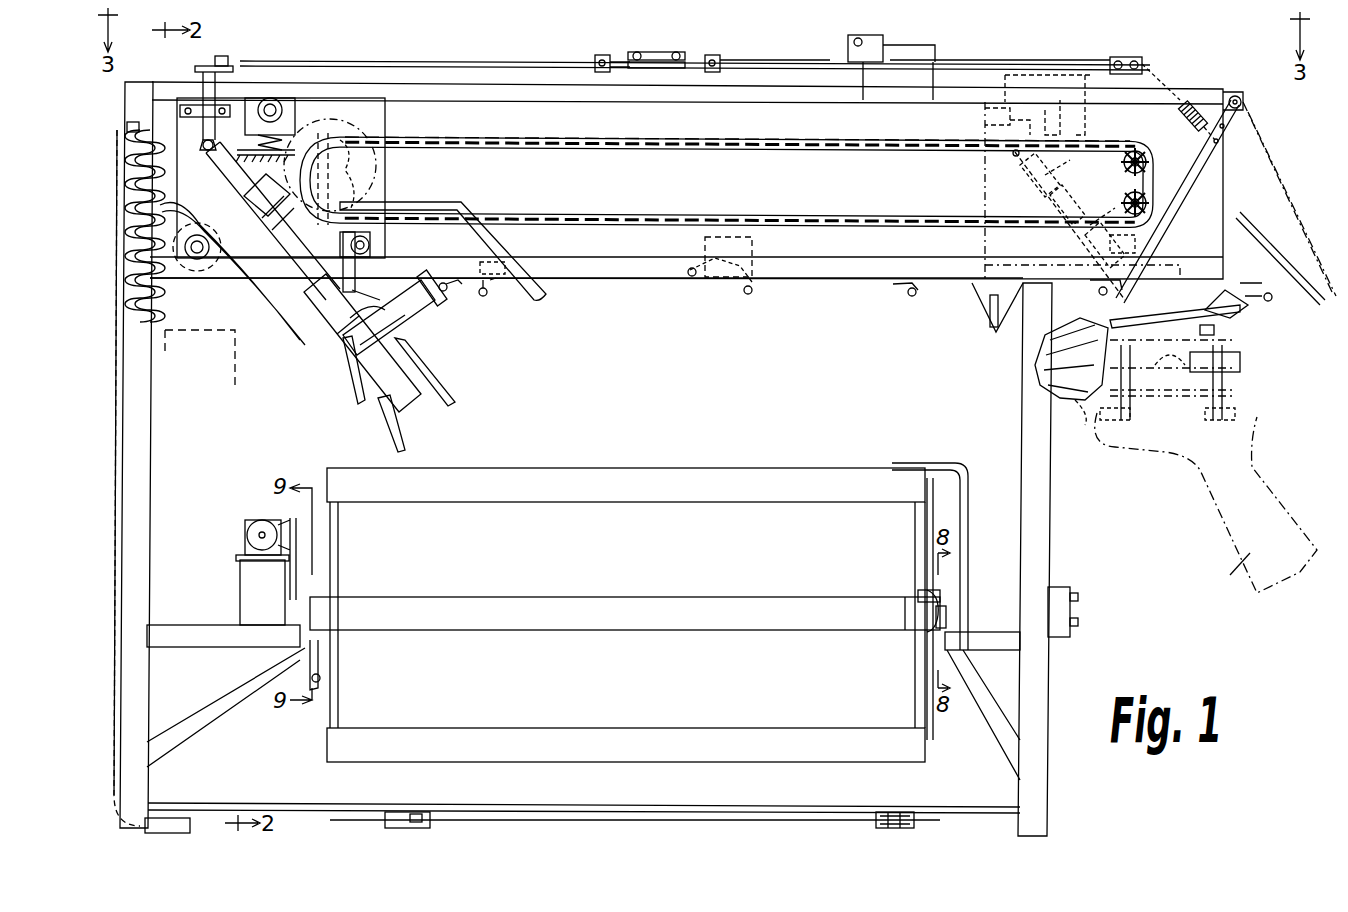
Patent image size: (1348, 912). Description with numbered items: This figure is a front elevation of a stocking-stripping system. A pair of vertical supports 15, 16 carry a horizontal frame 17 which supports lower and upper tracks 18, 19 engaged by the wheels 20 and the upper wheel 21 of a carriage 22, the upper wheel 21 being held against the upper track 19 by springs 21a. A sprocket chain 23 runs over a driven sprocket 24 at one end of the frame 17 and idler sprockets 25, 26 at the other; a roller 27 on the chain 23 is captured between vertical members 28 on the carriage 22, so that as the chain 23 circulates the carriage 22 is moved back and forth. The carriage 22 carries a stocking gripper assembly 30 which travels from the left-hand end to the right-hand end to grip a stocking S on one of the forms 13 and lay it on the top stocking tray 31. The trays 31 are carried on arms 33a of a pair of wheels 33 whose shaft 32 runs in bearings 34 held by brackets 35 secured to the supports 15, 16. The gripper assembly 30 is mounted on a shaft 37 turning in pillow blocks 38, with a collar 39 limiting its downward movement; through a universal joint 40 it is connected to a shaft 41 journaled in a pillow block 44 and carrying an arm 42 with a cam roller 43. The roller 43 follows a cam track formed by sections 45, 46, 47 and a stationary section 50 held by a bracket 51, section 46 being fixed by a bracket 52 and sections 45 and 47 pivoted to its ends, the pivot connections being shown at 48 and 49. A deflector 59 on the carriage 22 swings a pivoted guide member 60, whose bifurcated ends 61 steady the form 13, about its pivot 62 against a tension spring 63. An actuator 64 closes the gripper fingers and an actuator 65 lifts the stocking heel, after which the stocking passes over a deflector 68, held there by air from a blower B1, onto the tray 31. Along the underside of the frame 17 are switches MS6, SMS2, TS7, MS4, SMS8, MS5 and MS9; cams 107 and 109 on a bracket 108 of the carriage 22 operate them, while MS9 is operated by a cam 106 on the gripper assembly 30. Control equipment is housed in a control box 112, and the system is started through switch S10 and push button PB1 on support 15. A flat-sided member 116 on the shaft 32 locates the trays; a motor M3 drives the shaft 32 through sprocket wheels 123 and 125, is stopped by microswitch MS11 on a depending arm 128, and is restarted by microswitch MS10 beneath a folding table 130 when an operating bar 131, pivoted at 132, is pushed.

The form 13 is at (1235, 570).
The vertical support 15 is at (1049, 524).
The vertical support 16 is at (140, 412).
The horizontal frame 17 is at (820, 258).
The lower track 18 is at (598, 272).
The upper track 19 is at (716, 90).
The wheel 20 is at (380, 244).
The upper wheel 21 is at (292, 108).
The spring 21a is at (264, 156).
The carriage 22 is at (395, 137).
The sprocket chain 23 is at (528, 140).
The driven sprocket 24 is at (352, 170).
The idler sprocket 25 is at (1122, 162).
The idler sprocket 26 is at (1122, 203).
The roller 27 is at (222, 246).
The vertical member 28 is at (338, 145).
The stocking gripper assembly 30 is at (292, 374).
The stocking tray 31 is at (688, 480).
The shaft 32 is at (948, 616).
The wheel 33 is at (358, 542).
The arm 33a is at (920, 706).
The bearing 34 is at (940, 600).
The bracket 35 is at (238, 692).
The shaft 37 is at (270, 288).
The pillow block 38 is at (244, 200).
The collar 39 is at (270, 230).
The universal joint 40 is at (226, 170).
The shaft 41 is at (203, 98).
The arm 42 is at (228, 66).
The cam roller 43 is at (220, 56).
The pillow block 44 is at (203, 147).
The cam track section 45 is at (472, 62).
The cam track section 46 is at (625, 60).
The cam track section 47 is at (756, 62).
The pin 48 is at (604, 55).
The pin 49 is at (718, 56).
The stationary cam track section 50 is at (972, 62).
The bracket 51 is at (1124, 57).
The bracket 52 is at (660, 52).
The deflector 59 is at (540, 298).
The pivoted guide member 60 is at (1288, 196).
The bifurcated end 61 is at (1035, 370).
The pivot 62 is at (1243, 102).
The tension spring 63 is at (1193, 104).
The actuator 64 is at (405, 322).
The actuator 65 is at (1262, 236).
The deflector 68 is at (935, 462).
The cam 106 is at (428, 305).
The cam 107 is at (356, 300).
The bracket 108 is at (358, 272).
The cam 109 is at (362, 292).
The control box 112 is at (178, 822).
The flat sided member 116 is at (922, 595).
The sprocket wheel 123 is at (292, 515).
The sprocket wheel 125 is at (260, 600).
The depending arm 128 is at (322, 658).
The folding table 130 is at (958, 808).
The operating bar 131 is at (798, 810).
The pivot 132 is at (892, 812).
The blower B1 is at (980, 298).
The motor M3 is at (250, 532).
The microswitch MS4 is at (903, 288).
The microswitch MS5 is at (1150, 285).
The microswitch MS6 is at (450, 292).
The microswitch MS9 is at (1240, 286).
The microswitch MS10 is at (402, 814).
The microswitch MS11 is at (322, 680).
The special microswitch SMS2 is at (498, 282).
The special microswitch SMS8 is at (1100, 288).
The toggle switch TS7 is at (740, 290).
The push button PB1 is at (1080, 596).
The switch S10 is at (1080, 622).
The stocking S is at (1210, 490).